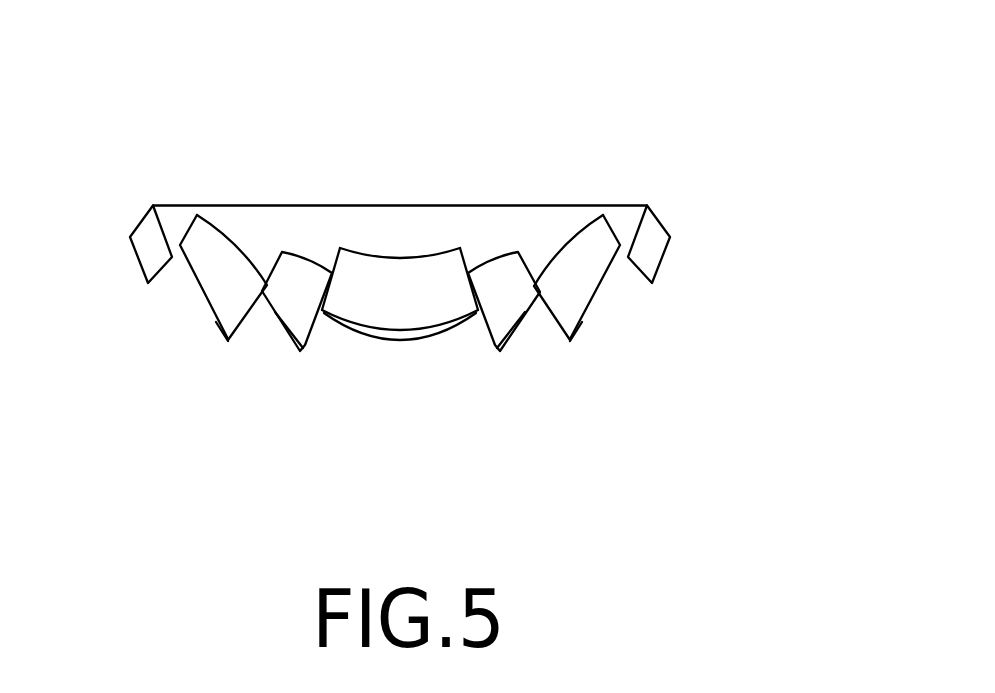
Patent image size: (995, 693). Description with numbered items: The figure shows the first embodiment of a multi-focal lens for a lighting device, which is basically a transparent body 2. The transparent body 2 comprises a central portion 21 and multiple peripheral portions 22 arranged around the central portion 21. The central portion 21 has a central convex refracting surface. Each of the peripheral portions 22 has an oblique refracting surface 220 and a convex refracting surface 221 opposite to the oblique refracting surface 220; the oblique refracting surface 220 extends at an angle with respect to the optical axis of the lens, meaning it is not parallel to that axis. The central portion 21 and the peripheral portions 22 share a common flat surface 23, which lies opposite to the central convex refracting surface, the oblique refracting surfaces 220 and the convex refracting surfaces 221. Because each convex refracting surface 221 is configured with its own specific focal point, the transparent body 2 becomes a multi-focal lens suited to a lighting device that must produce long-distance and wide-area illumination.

The transparent body 2 is at (690, 221).
The central portion 21 is at (383, 342).
The peripheral portions 22 is at (349, 348).
The oblique refracting surface 220 is at (244, 321).
The convex refracting surface 221 is at (212, 272).
The common flat surface 23 is at (373, 205).